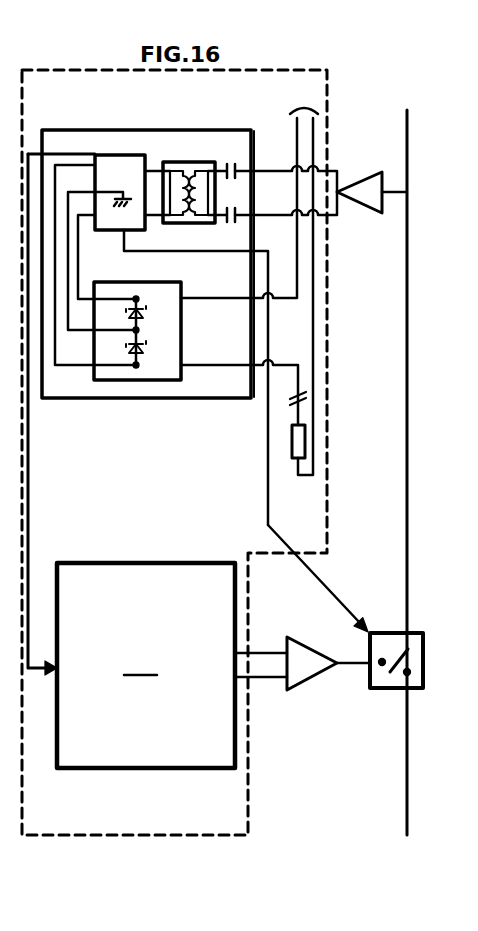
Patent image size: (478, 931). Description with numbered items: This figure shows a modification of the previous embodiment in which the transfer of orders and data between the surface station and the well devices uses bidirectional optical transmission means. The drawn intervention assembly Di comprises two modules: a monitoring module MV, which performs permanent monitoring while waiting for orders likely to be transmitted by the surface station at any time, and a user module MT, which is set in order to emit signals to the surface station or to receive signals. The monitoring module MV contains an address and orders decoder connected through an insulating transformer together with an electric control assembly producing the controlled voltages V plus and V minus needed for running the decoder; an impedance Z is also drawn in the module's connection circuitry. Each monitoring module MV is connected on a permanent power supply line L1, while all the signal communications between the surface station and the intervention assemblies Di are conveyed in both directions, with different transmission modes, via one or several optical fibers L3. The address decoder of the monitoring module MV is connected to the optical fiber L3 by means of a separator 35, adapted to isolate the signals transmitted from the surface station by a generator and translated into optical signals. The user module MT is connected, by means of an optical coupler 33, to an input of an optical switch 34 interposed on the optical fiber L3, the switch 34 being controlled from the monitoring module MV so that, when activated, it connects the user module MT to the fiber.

The optical coupler 33 is at (312, 690).
The optical switch 34 is at (378, 688).
The separator 35 is at (362, 213).
The monitoring module MV is at (107, 130).
The user module MT is at (146, 665).
The impedance Z is at (291, 425).
The power supply line L1 is at (304, 99).
The optical fiber L3 is at (407, 461).
The intervention assembly Di is at (254, 800).